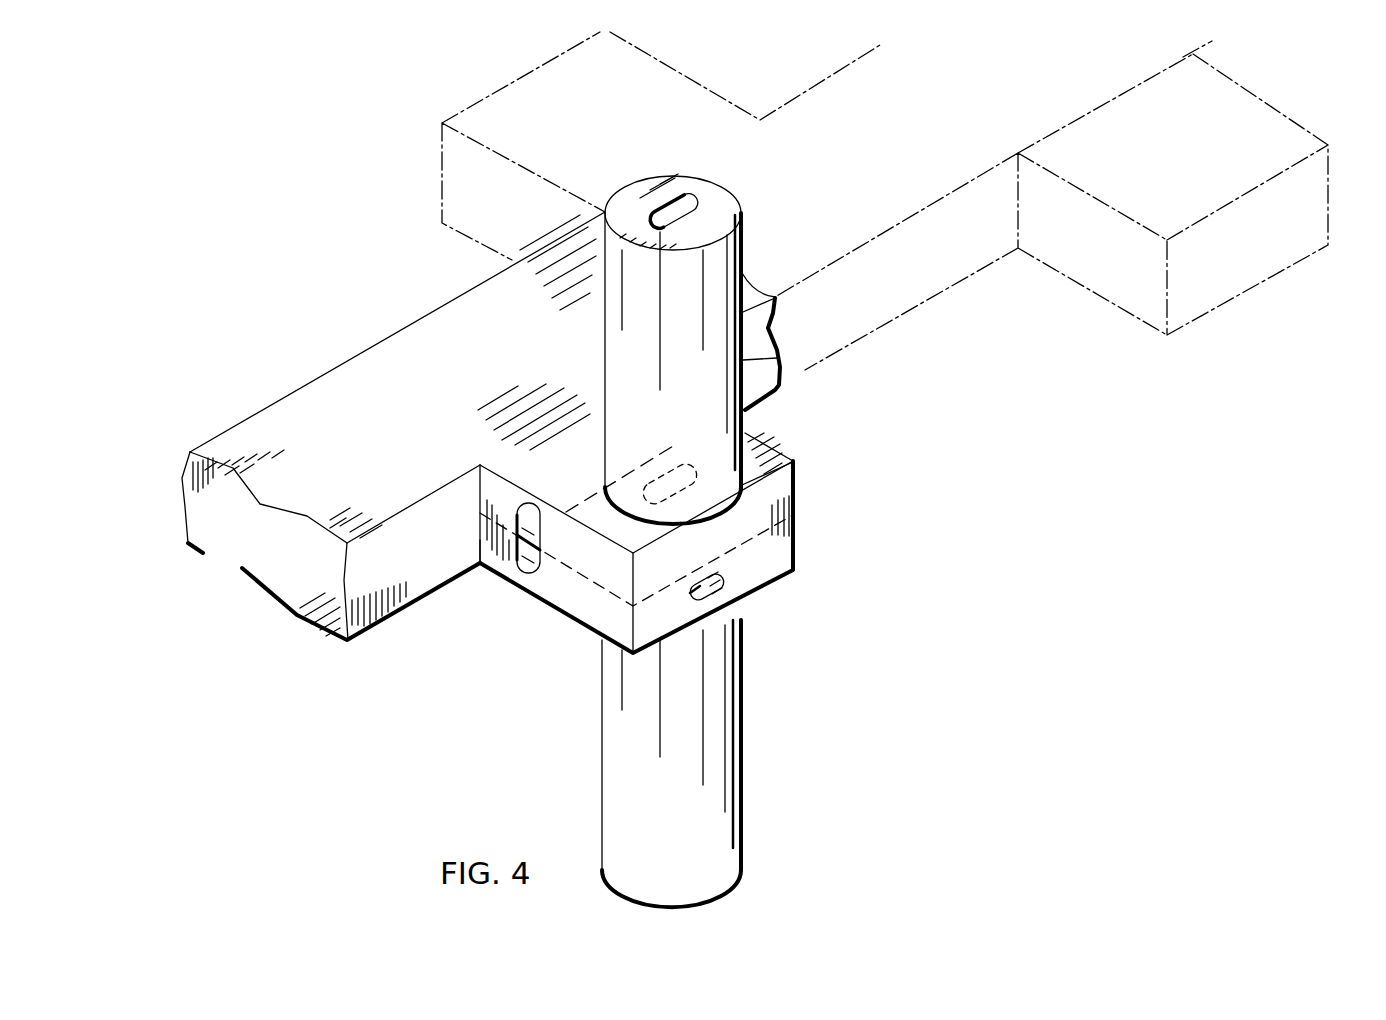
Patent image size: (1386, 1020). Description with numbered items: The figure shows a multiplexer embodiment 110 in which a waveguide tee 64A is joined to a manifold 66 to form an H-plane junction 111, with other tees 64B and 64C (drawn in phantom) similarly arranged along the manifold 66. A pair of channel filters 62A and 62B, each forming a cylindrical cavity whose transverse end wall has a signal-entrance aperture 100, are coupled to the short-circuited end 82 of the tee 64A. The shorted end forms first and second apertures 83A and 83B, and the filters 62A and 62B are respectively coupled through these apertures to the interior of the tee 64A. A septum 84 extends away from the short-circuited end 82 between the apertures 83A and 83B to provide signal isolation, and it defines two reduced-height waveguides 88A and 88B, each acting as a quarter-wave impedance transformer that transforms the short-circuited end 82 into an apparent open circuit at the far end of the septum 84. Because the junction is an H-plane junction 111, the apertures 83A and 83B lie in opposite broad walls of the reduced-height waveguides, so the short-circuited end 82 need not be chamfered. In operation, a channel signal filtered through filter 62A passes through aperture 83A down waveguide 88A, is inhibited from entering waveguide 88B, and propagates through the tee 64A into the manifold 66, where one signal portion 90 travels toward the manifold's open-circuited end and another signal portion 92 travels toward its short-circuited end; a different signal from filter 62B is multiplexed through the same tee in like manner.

The tee 64C is at (732, 100).
The tee 64B is at (1292, 125).
The manifold 66 is at (406, 606).
The tee 64A is at (795, 481).
The short-circuited end 82 is at (783, 537).
The reduced-height waveguide 88A is at (510, 506).
The septum 84 is at (480, 566).
The reduced-height waveguide 88B is at (497, 572).
The first aperture 83A is at (688, 468).
The second aperture 83B is at (692, 565).
The channel filter 62A is at (780, 360).
The signal-entrance aperture 100 is at (689, 208).
The channel filter 62B is at (743, 725).
The signal portion 90 is at (826, 215).
The signal portion 92 is at (267, 539).
The multiplexer embodiment 110 is at (414, 692).
The H-plane junction 111 is at (502, 666).